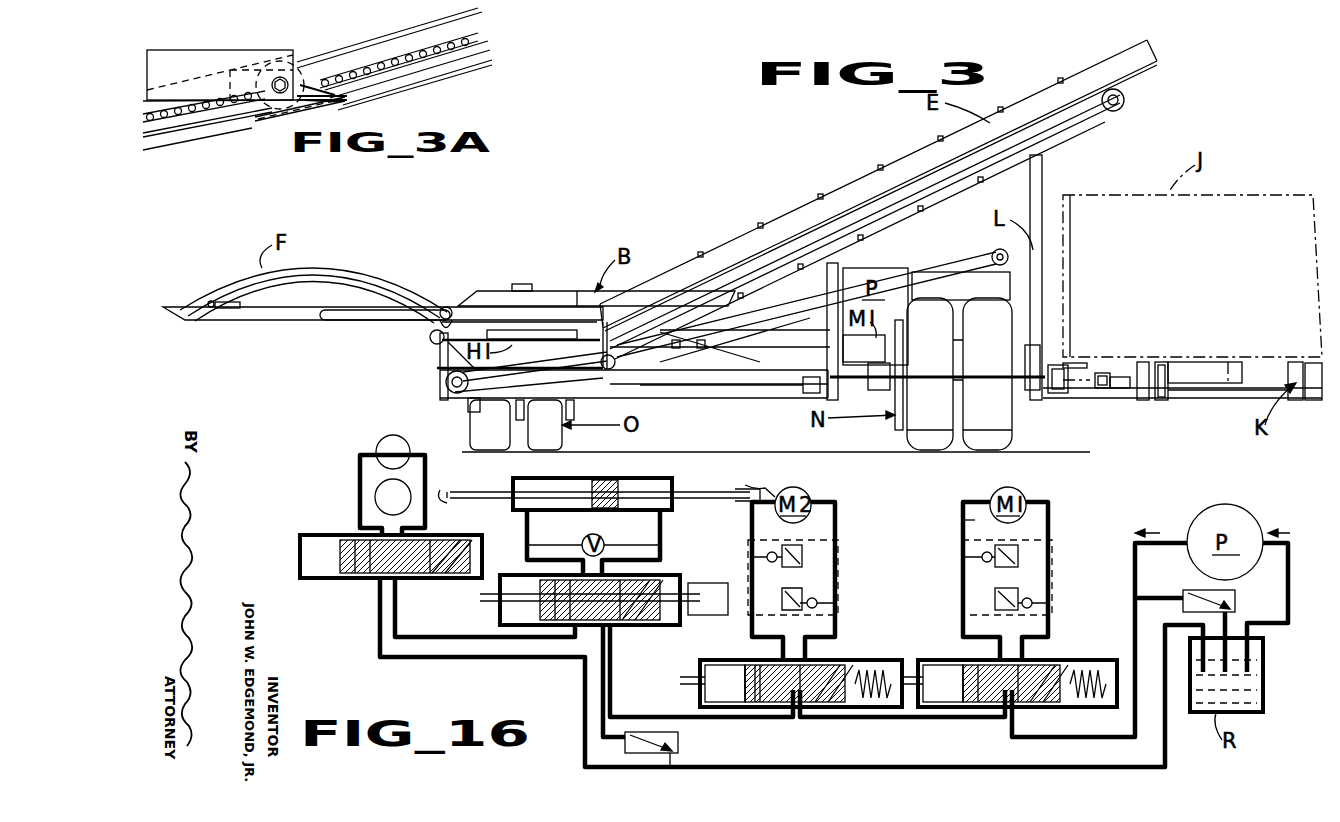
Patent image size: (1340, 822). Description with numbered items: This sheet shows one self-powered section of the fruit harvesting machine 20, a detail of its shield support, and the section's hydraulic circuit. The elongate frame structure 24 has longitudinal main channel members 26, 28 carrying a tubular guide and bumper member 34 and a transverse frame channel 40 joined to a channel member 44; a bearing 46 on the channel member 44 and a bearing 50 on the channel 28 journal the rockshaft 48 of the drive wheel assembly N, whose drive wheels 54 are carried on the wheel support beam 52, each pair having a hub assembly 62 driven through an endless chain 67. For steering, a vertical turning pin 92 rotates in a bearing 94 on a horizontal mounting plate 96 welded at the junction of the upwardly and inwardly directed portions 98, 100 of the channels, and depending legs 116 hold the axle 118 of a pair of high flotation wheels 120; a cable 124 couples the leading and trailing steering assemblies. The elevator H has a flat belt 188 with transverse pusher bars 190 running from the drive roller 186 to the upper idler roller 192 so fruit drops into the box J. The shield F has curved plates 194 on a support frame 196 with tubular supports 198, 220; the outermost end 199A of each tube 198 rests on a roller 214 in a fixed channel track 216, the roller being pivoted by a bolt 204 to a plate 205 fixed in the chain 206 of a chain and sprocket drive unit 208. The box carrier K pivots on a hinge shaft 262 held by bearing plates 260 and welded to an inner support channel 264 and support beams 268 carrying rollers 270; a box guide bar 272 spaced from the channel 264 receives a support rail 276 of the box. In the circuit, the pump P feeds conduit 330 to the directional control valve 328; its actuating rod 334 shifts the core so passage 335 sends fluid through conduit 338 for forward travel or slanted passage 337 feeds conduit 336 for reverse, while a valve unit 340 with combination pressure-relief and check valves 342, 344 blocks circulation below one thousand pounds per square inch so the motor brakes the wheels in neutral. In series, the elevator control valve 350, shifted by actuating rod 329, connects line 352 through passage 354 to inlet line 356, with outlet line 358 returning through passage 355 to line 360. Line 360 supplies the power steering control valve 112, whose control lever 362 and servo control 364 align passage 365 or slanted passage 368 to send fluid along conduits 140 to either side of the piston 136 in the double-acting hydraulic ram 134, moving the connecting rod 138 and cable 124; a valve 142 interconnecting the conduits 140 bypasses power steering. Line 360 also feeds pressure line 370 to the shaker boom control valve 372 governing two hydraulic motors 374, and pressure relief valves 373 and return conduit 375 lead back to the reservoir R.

In FIG. 3, the fruit harvesting machine 20 is at (787, 205).
In FIG. 3, the frame structure 24 is at (740, 398).
In FIG. 3, the longitudinal main channel member 26 is at (440, 366).
In FIG. 3, the longitudinal main channel member 28 is at (875, 316).
In FIG. 3, the tubular guide and bumper member 34 is at (428, 338).
In FIG. 3, the transverse frame channel 40 is at (712, 392).
In FIG. 3, the channel member 44 is at (1030, 345).
In FIG. 3, the bearing 46 is at (1045, 399).
In FIG. 3, the rockshaft 48 is at (980, 378).
In FIG. 3, the bearing 50 is at (803, 382).
In FIG. 3, the wheel support beam 52 is at (898, 372).
In FIG. 3, the drive wheels 54 is at (985, 470).
In FIG. 3, the hub assembly 62 is at (948, 392).
In FIG. 3, the endless chain 67 is at (895, 425).
In FIG. 3, the vertical turning pin 92 is at (526, 285).
In FIG. 3, the bearing 94 is at (505, 290).
In FIG. 3, the horizontal mounting plate 96 is at (568, 296).
In FIG. 3, the upwardly and inwardly directed portion 98 is at (470, 296).
In FIG. 3, the upwardly and inwardly directed portion 100 is at (615, 300).
In FIG. 16, the power steering control valve 112 is at (495, 617).
In FIG. 3, the depending legs 116 is at (516, 412).
In FIG. 3, the axle 118 is at (468, 412).
In FIG. 3, the high flotation wheels 120 is at (483, 441).
In FIG. 16, the cable 124 is at (445, 503).
In FIG. 16, the double-acting hydraulic ram 134 is at (632, 490).
In FIG. 16, the piston 136 is at (604, 482).
In FIG. 16, the connecting rod 138 is at (487, 493).
In FIG. 16, the conduits 140 is at (636, 542).
In FIG. 16, the valve 142 is at (600, 528).
In FIG. 3, the drive roller 186 is at (446, 388).
In FIG. 3, the flat belt 188 is at (875, 205).
In FIG. 3, the transverse pusher bars 190 is at (1040, 108).
In FIG. 3, the upper idler roller 192 is at (1126, 101).
In FIG. 3, the curved sheet metal plates 194 is at (305, 270).
In FIG. 3, the support frame 196 is at (312, 322).
In FIG. 3A, the tubular support 198 is at (185, 55).
In FIG. 3A, the outermost end 199A is at (258, 52).
In FIG. 3A, the bolt 204 is at (288, 92).
In FIG. 3A, the plate 205 is at (322, 102).
In FIG. 3, the plate 205 is at (735, 320).
In FIG. 3A, the chain 206 is at (330, 68).
In FIG. 3A, the chain and sprocket drive unit 208 is at (478, 30).
In FIG. 3, the chain and sprocket drive unit 208 is at (962, 256).
In FIG. 3A, the roller 214 is at (268, 115).
In FIG. 3A, the fixed channel track 216 is at (440, 74).
In FIG. 3, the fixed channel track 216 is at (935, 263).
In FIG. 3, the tubular supports 220 is at (268, 320).
In FIG. 3, the vertical bearing plates 260 is at (828, 388).
In FIG. 3, the hinge shaft 262 is at (828, 400).
In FIG. 3, the inner support channel 264 is at (1065, 375).
In FIG. 3, the support beams 268 is at (1172, 365).
In FIG. 3, the rollers 270 is at (1160, 362).
In FIG. 3, the box guide bar 272 is at (1110, 388).
In FIG. 3, the support rails 276 is at (1093, 362).
In FIG. 16, the directional control valve 328 is at (1083, 657).
In FIG. 16, the actuating rod 329 is at (680, 680).
In FIG. 16, the conduit 330 is at (1135, 722).
In FIG. 16, the actuating rod 334 is at (912, 680).
In FIG. 16, the valve passage 335 is at (980, 662).
In FIG. 16, the conduit 336 is at (963, 521).
In FIG. 16, the slanted passage 337 is at (1028, 672).
In FIG. 16, the conduit 338 is at (1050, 520).
In FIG. 16, the valve unit 340 is at (958, 541).
In FIG. 16, the combination pressure-relief and check valve 342 is at (1020, 560).
In FIG. 16, the combination pressure-relief and check valve 344 is at (1020, 597).
In FIG. 16, the elevator control valve 350 is at (843, 657).
In FIG. 16, the line 352 is at (893, 718).
In FIG. 16, the passage 354 is at (755, 668).
In FIG. 16, the valve passage 355 is at (732, 662).
In FIG. 16, the inlet line 356 is at (833, 518).
In FIG. 16, the outlet line 358 is at (752, 530).
In FIG. 16, the pressure conduit 360 is at (670, 715).
In FIG. 16, the control lever 362 is at (497, 598).
In FIG. 16, the servo control 364 is at (715, 585).
In FIG. 16, the passage 365 is at (565, 620).
In FIG. 16, the slanted passage 368 is at (620, 628).
In FIG. 16, the pressure line 370 is at (487, 640).
In FIG. 16, the shaker boom control valve 372 is at (328, 533).
In FIG. 16, the pressure relief valves 373 is at (680, 742).
In FIG. 16, the hydraulic motors 374 is at (388, 478).
In FIG. 16, the conduit 375 is at (383, 657).